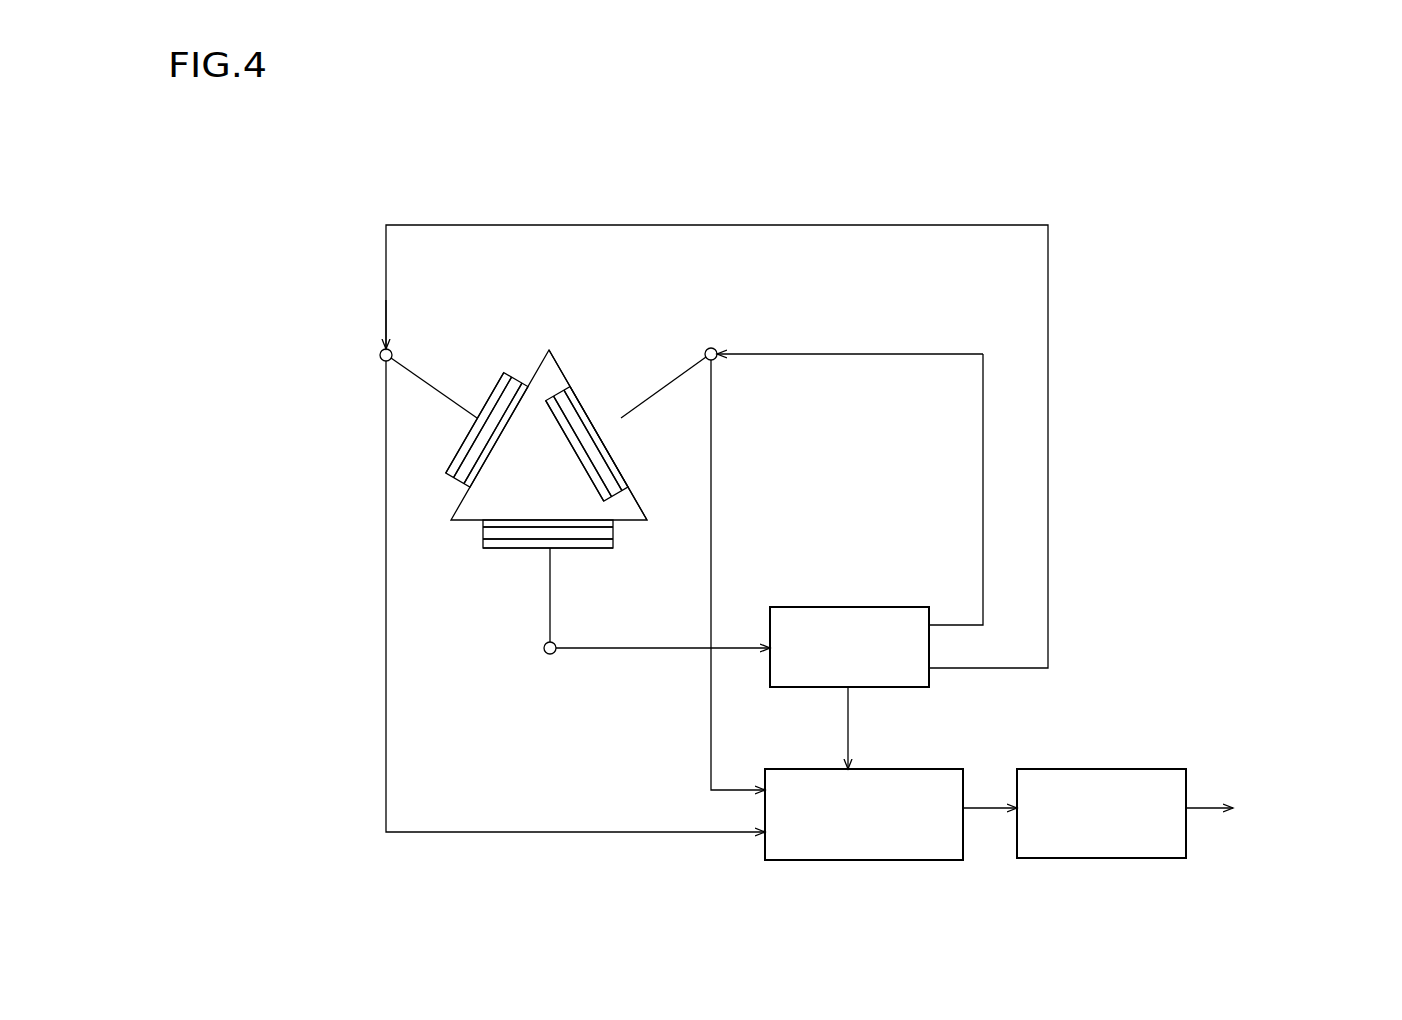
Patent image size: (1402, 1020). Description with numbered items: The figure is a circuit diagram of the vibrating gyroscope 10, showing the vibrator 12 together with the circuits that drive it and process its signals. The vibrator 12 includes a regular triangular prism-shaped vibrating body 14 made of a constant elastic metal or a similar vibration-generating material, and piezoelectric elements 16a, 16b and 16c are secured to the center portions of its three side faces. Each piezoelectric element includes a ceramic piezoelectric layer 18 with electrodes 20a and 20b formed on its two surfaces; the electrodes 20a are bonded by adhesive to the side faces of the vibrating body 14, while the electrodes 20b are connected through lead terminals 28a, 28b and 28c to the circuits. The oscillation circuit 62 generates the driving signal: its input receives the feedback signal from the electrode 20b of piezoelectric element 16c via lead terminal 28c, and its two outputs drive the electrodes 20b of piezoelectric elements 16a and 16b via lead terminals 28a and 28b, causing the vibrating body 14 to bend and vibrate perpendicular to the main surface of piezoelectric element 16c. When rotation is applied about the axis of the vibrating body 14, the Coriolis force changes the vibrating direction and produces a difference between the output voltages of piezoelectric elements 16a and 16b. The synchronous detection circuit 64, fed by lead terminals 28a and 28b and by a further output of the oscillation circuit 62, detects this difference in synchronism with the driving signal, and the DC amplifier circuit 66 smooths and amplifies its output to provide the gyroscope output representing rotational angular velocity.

The vibrating gyroscope 10 is at (962, 148).
The vibrator 12 is at (560, 353).
The vibrating body 14 is at (551, 384).
The piezoelectric element 16a is at (456, 438).
The piezoelectric element 16b is at (614, 396).
The piezoelectric element 16c is at (532, 553).
The piezoelectric layer 18 is at (509, 377).
The electrode 20a is at (521, 386).
The electrode 20b is at (491, 393).
The lead terminal 28a is at (385, 362).
The lead terminal 28b is at (716, 348).
The lead terminal 28c is at (553, 656).
The oscillation circuit 62 is at (898, 677).
The synchronous detection circuit 64 is at (933, 855).
The DC amplifier circuit 66 is at (1160, 850).